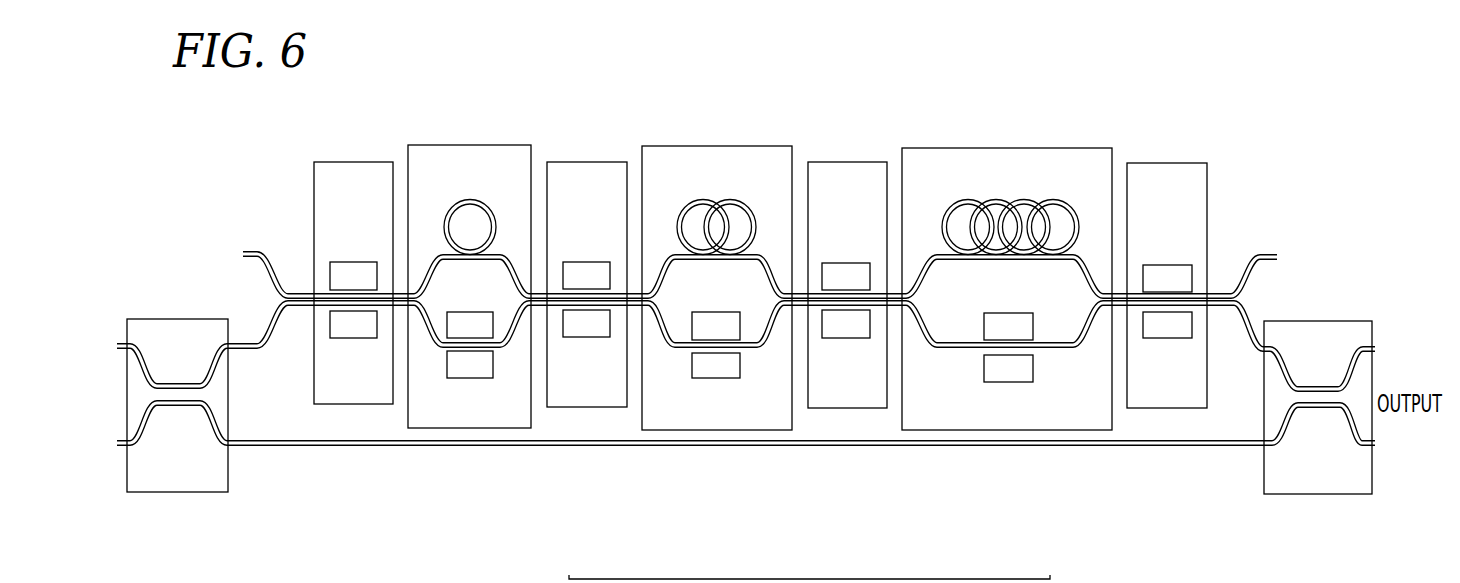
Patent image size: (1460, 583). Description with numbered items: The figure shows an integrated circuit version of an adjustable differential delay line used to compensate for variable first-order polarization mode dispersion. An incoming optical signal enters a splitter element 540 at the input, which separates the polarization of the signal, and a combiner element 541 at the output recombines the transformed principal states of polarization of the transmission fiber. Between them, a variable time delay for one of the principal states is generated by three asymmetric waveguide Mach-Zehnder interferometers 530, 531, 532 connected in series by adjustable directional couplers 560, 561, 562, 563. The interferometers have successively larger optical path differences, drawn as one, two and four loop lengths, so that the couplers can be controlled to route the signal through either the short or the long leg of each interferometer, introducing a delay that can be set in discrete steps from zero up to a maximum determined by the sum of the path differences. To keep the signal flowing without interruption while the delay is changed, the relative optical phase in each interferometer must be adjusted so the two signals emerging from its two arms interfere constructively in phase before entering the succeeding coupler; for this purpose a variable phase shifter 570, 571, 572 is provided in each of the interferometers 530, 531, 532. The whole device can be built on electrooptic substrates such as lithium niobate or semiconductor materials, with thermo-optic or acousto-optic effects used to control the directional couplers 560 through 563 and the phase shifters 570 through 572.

The asymmetric waveguide Mach-Zehnder interferometer 530 is at (469, 255).
The asymmetric waveguide Mach-Zehnder interferometer 531 is at (717, 258).
The asymmetric waveguide Mach-Zehnder interferometer 532 is at (1007, 258).
The polarization splitting element 540 is at (173, 493).
The polarization recombining element 541 is at (1315, 495).
The adjustable directional coupler 560 is at (357, 162).
The adjustable directional coupler 561 is at (590, 161).
The adjustable directional coupler 562 is at (850, 162).
The adjustable directional coupler 563 is at (1170, 163).
The variable phase shifter 570 is at (470, 379).
The variable phase shifter 571 is at (720, 379).
The variable phase shifter 572 is at (1005, 383).